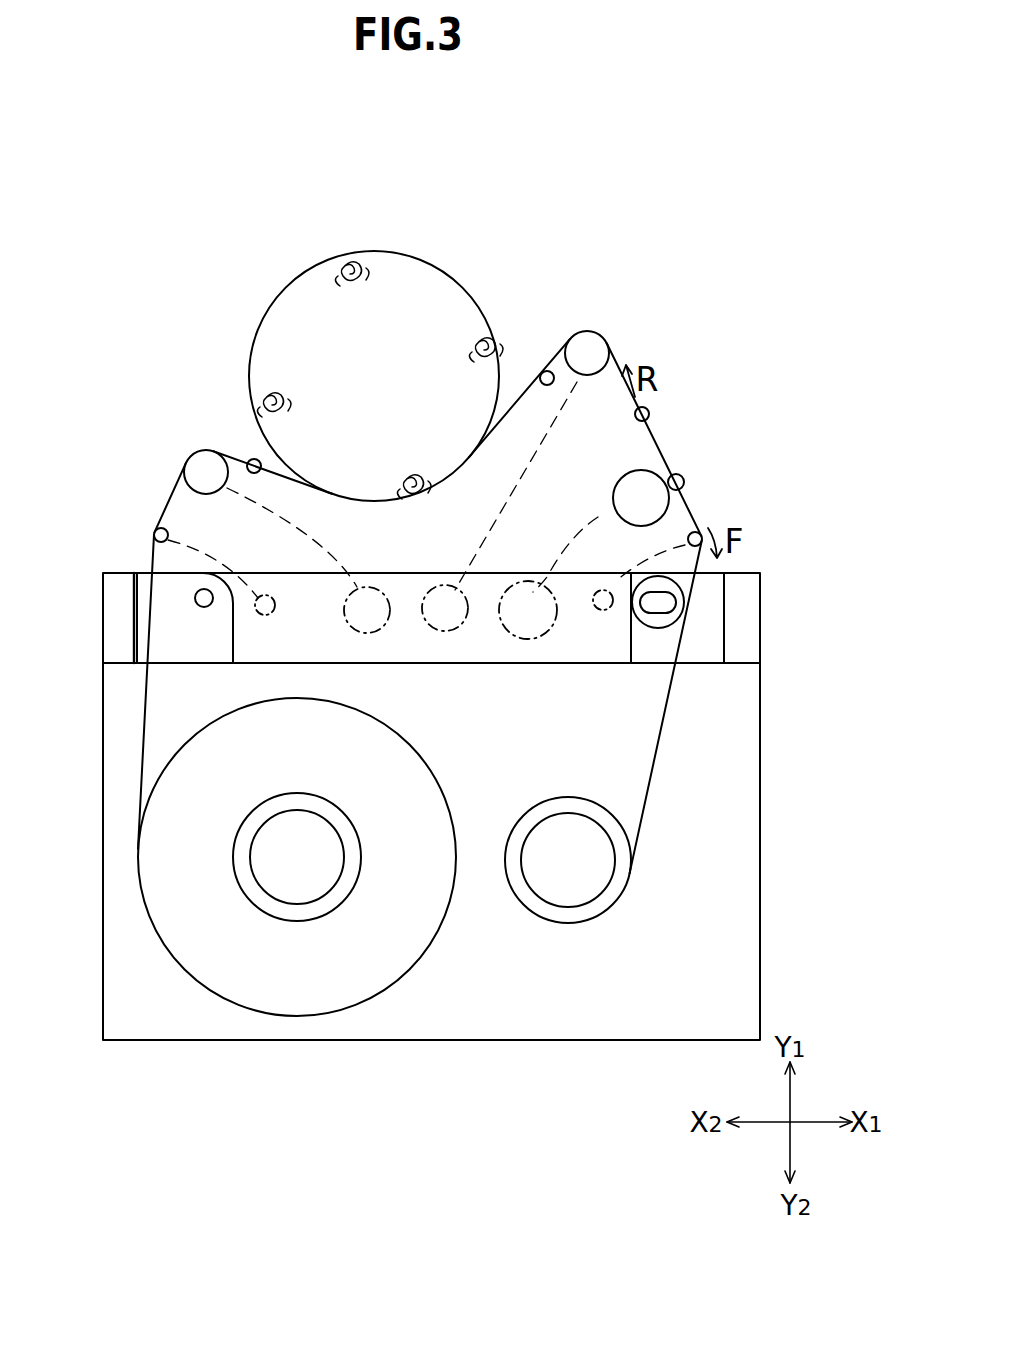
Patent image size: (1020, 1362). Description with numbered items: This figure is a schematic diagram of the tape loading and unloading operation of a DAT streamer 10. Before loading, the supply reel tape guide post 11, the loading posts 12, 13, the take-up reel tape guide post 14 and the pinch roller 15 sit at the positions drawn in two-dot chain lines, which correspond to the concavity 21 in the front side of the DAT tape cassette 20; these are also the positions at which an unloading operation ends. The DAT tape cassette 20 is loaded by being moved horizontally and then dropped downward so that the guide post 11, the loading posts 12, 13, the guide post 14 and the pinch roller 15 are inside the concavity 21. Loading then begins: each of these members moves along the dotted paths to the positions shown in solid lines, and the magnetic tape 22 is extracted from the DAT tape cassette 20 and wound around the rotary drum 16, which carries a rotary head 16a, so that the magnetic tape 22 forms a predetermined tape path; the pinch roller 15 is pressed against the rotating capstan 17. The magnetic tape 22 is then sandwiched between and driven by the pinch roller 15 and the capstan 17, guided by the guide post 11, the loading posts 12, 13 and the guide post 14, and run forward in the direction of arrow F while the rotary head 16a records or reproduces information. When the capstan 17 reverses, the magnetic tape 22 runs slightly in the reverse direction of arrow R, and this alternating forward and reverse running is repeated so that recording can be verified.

The DAT streamer 10 is at (531, 146).
The supply reel tape guide post 11 is at (154, 535).
The loading post 12 is at (200, 460).
The loading post 13 is at (585, 348).
The take-up reel tape guide post 14 is at (698, 533).
The pinch roller 15 is at (623, 482).
The rotary drum 16 is at (465, 287).
The rotary head 16a is at (362, 270).
The capstan 17 is at (680, 473).
The DAT tape cassette 20 is at (750, 846).
The concavity 21 is at (315, 620).
The magnetic tape 22 is at (162, 503).